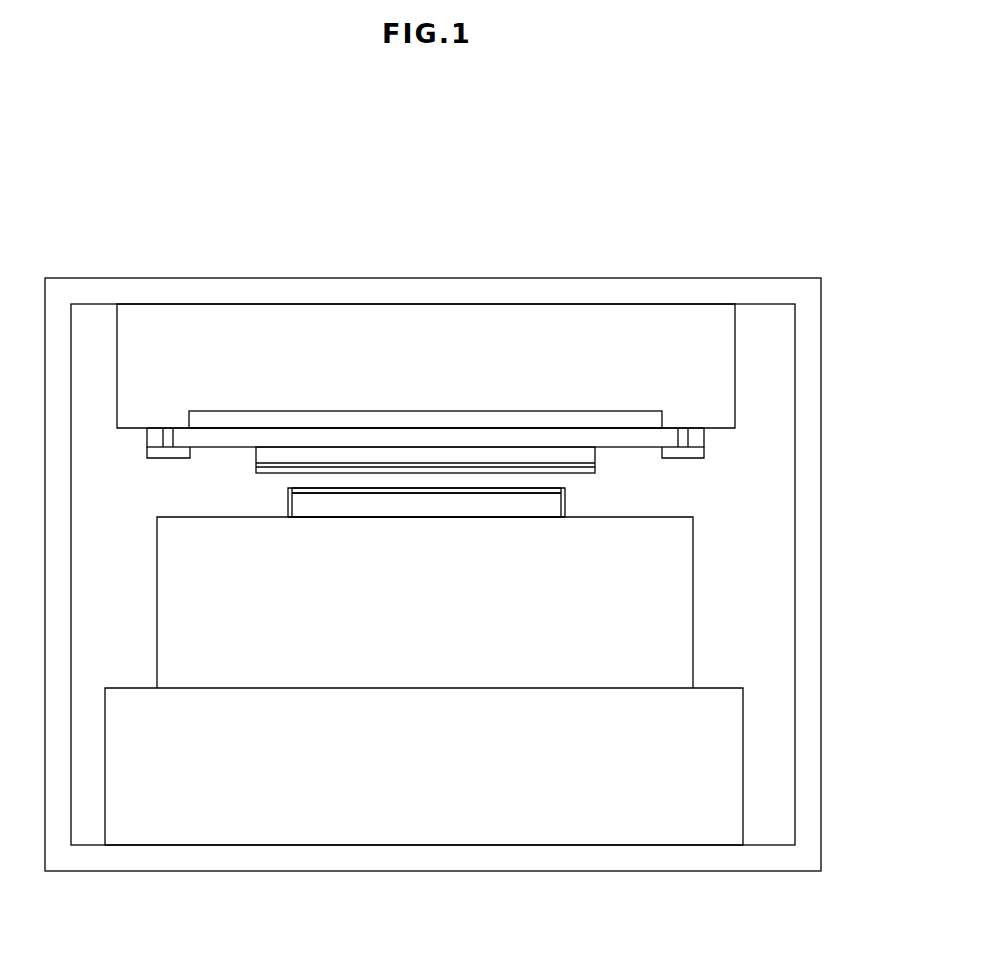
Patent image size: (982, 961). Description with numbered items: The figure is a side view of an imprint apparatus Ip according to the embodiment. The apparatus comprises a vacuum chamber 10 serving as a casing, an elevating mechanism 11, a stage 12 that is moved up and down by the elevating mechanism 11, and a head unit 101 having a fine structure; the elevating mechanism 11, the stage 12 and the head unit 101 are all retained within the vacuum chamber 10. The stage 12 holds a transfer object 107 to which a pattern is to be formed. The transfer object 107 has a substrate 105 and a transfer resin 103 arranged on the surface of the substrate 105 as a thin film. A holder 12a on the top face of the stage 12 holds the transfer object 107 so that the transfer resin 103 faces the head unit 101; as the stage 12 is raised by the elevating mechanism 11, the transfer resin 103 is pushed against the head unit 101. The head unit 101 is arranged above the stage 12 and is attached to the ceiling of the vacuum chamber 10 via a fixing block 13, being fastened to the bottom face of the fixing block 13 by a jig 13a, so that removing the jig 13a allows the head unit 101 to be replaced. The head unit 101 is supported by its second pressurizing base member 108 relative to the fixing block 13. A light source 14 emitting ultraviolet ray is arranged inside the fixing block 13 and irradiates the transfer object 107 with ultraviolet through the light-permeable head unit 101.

The imprint apparatus Ip is at (586, 227).
The vacuum chamber 10 is at (745, 278).
The elevating mechanism 11 is at (436, 784).
The stage 12 is at (672, 617).
The holder 12a is at (288, 502).
The fixing block 13 is at (438, 376).
The jig 13a is at (153, 453).
The light source 14 is at (607, 411).
The head unit 101 is at (607, 461).
The transfer resin 103 is at (383, 493).
The substrate 105 is at (435, 507).
The transfer object 107 is at (373, 568).
The second pressurizing base member 108 is at (649, 445).